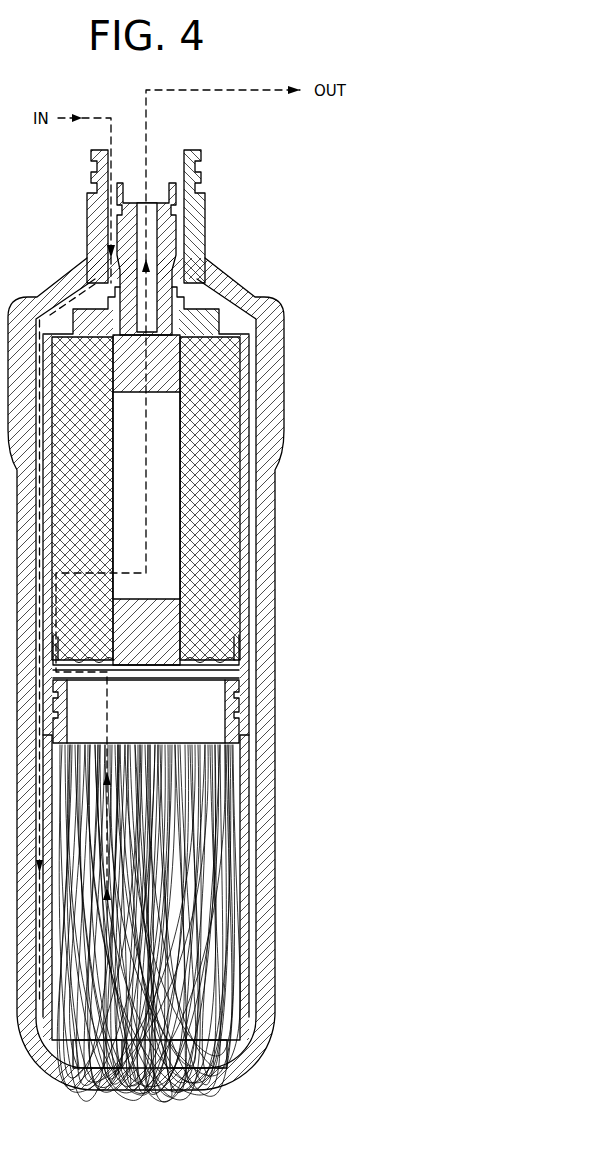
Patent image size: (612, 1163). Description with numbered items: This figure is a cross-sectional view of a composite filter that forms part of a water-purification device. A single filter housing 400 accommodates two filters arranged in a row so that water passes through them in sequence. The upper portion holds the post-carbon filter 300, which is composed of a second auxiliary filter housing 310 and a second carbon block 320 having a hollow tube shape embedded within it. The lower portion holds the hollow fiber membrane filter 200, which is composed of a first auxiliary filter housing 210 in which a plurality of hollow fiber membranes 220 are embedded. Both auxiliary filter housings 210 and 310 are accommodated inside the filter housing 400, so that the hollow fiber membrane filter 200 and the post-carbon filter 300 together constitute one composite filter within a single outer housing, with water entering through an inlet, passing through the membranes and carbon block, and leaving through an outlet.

The filter housing 400 is at (268, 410).
The post-carbon filter 300 is at (216, 687).
The second auxiliary filter housing 310 is at (245, 567).
The second carbon block 320 is at (232, 497).
The hollow fiber membrane filter 200 is at (218, 918).
The first auxiliary filter housing 210 is at (244, 809).
The hollow fiber membranes 220 is at (225, 850).